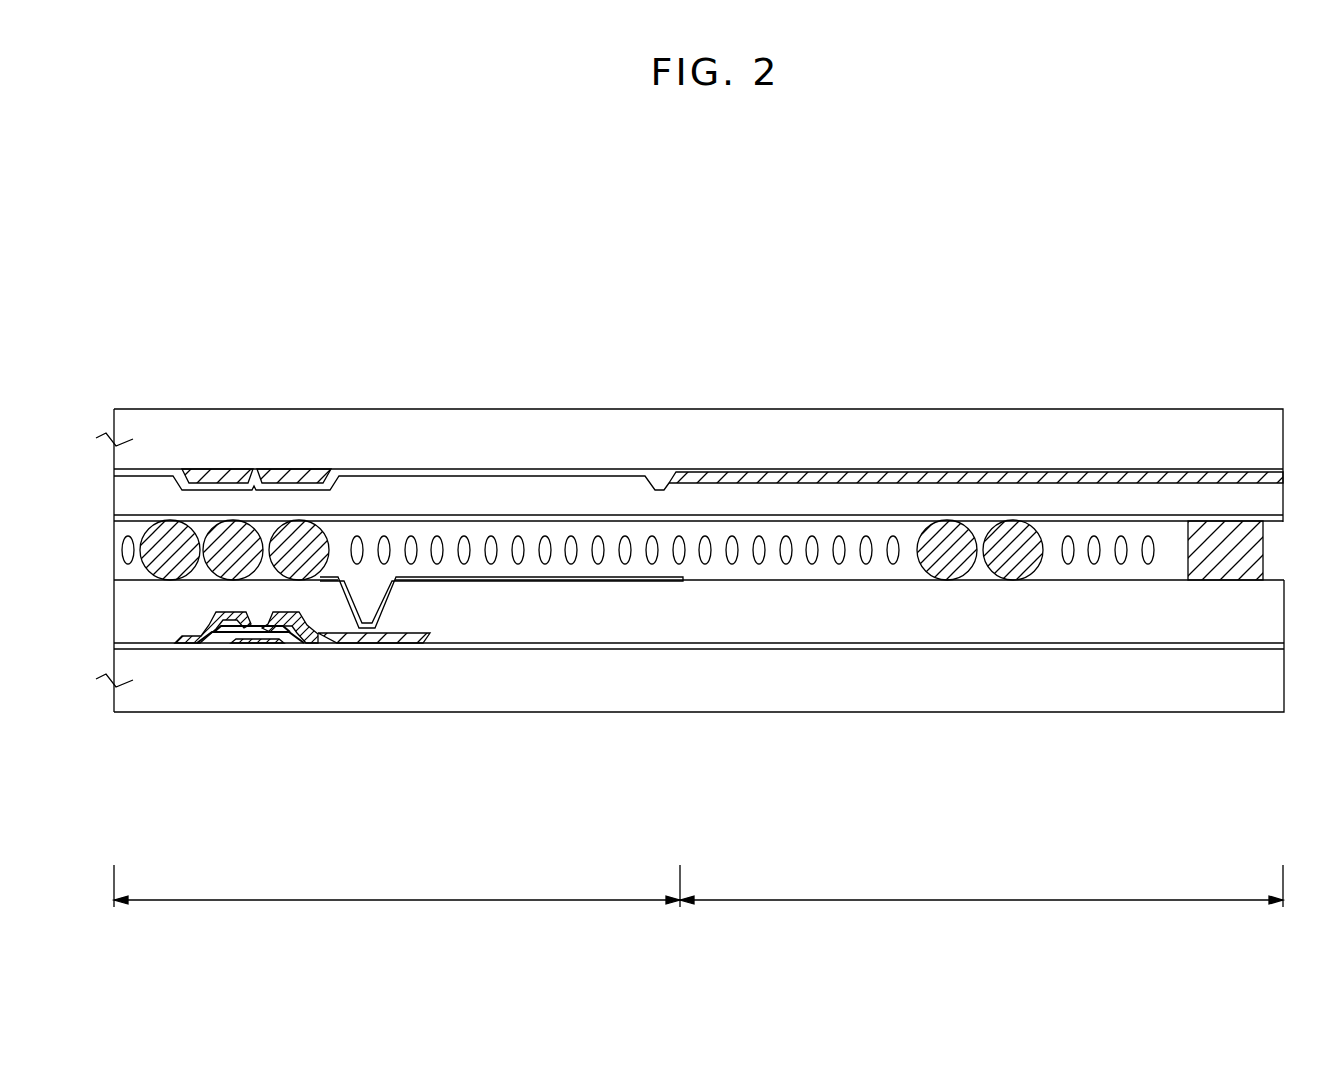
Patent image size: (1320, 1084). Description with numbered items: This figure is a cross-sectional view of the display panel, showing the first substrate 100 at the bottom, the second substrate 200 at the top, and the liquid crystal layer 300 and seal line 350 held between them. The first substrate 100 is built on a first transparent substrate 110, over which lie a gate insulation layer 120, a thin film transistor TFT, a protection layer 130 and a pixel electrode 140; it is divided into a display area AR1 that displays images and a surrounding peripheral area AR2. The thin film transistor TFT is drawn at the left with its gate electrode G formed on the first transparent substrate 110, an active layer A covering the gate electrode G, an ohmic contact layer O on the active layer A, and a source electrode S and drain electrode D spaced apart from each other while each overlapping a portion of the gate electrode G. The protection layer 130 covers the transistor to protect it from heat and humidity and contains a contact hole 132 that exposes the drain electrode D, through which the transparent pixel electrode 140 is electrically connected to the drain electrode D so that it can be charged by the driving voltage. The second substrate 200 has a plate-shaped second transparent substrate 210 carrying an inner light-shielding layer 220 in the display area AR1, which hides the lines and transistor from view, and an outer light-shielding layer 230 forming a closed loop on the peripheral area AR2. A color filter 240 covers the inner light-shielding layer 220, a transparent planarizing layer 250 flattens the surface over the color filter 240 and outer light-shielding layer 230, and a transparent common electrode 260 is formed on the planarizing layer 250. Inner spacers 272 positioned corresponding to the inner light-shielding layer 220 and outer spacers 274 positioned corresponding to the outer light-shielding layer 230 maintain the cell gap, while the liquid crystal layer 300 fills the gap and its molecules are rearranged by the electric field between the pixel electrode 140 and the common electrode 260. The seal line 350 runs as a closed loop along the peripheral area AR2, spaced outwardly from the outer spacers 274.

The first substrate 100 is at (243, 809).
The first transparent substrate 110 is at (668, 682).
The gate insulation layer 120 is at (598, 646).
The protection layer 130 is at (540, 602).
The contact hole 132 is at (373, 603).
The pixel electrode 140 is at (478, 582).
The thin film transistor TFT is at (175, 759).
The source electrode S is at (181, 645).
The active layer A is at (220, 636).
The gate electrode G is at (257, 645).
The ohmic contact layer O is at (300, 636).
The drain electrode D is at (335, 630).
The second substrate 200 is at (975, 309).
The second transparent substrate 210 is at (576, 445).
The inner light-shielding layer 220 is at (252, 480).
The outer light-shielding layer 230 is at (702, 477).
The color filter 240 is at (517, 472).
The planarizing layer 250 is at (453, 498).
The common electrode 260 is at (390, 520).
The inner spacers 272 is at (160, 548).
The outer spacers 274 is at (940, 548).
The liquid crystal layer 300 is at (812, 570).
The seal line 350 is at (1226, 562).
The display area AR1 is at (397, 886).
The peripheral area AR2 is at (981, 886).